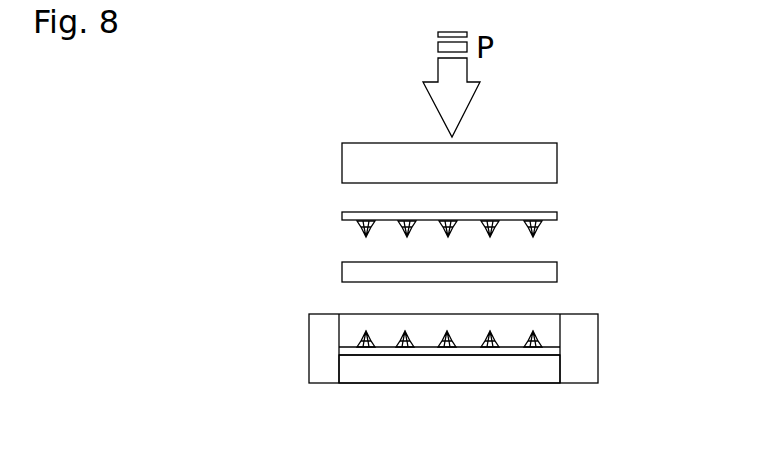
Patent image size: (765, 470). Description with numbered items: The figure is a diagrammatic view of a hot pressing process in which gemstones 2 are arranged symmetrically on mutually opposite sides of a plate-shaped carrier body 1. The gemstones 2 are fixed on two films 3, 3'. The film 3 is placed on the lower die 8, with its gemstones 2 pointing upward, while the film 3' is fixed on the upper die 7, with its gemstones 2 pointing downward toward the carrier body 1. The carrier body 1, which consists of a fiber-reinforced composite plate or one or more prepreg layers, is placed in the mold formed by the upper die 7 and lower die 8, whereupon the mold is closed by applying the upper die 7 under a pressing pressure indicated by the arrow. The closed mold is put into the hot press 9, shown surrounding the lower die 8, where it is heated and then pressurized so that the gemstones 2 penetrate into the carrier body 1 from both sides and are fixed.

The upper die 7 is at (538, 158).
The film 3' is at (501, 199).
The gemstones 2 is at (498, 230).
The carrier body 1 is at (540, 273).
The hot press 9 is at (330, 365).
The film 3 is at (494, 377).
The lower die 8 is at (537, 373).